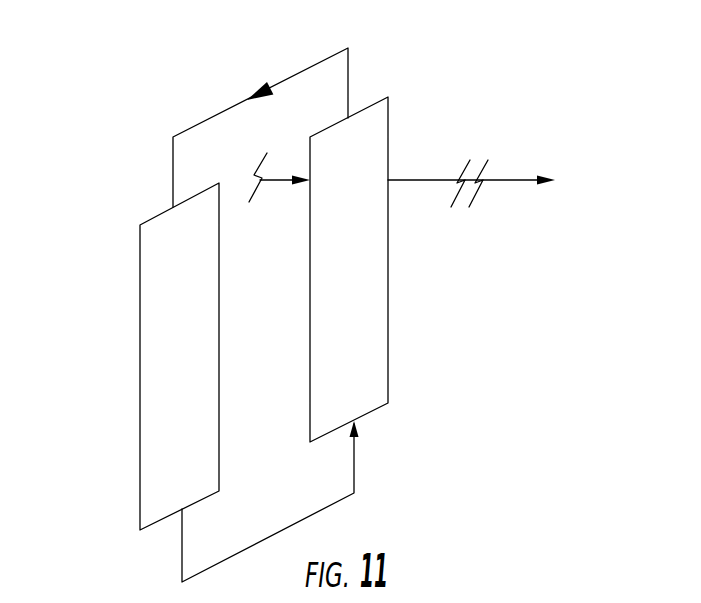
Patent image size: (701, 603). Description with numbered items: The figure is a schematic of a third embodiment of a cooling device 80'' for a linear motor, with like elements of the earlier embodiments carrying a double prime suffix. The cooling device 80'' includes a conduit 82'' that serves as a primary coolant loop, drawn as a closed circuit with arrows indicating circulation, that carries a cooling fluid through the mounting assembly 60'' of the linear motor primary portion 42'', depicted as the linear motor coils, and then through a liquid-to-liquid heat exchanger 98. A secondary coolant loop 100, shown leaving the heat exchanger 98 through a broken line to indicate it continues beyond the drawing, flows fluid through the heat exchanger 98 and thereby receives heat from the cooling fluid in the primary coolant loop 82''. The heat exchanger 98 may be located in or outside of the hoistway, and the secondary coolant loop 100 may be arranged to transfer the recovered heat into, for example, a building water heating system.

The cooling device 80'' is at (311, 294).
The conduit 82'' is at (260, 106).
The linear motor primary portion 42'' is at (143, 356).
The mounting assembly 60'' is at (143, 356).
The liquid-to-liquid heat exchanger 98 is at (357, 287).
The secondary coolant loop 100 is at (425, 183).